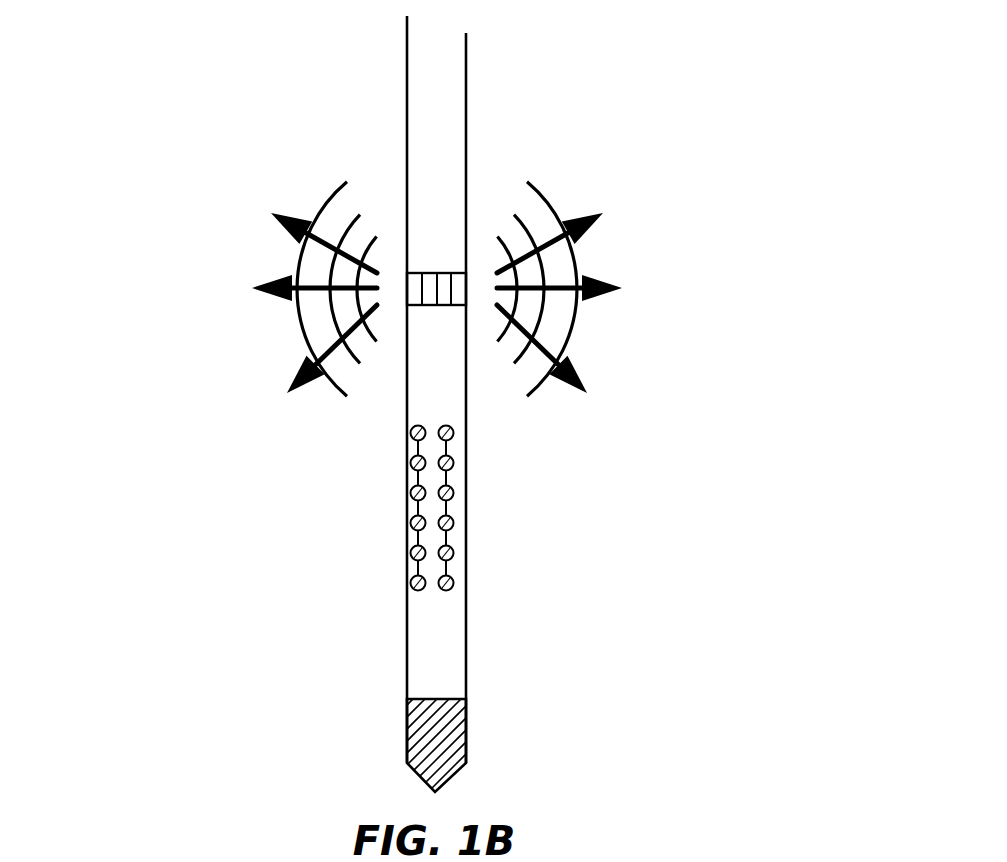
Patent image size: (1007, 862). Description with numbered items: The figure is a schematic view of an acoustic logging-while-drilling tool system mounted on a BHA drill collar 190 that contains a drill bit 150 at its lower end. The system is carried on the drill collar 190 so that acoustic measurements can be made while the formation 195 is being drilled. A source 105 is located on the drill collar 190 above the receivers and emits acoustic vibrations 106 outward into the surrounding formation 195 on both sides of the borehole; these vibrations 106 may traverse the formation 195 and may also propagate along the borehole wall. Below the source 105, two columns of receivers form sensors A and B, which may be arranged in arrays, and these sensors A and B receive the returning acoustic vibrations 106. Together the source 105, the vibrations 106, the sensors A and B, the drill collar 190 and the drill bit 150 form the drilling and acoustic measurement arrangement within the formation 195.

The BHA drill collar 190 is at (505, 81).
The source 105 is at (442, 313).
The acoustic vibrations 106 is at (607, 254).
The sensor A is at (386, 450).
The sensor B is at (470, 473).
The drill bit 150 is at (393, 751).
The formation 195 is at (32, 200).